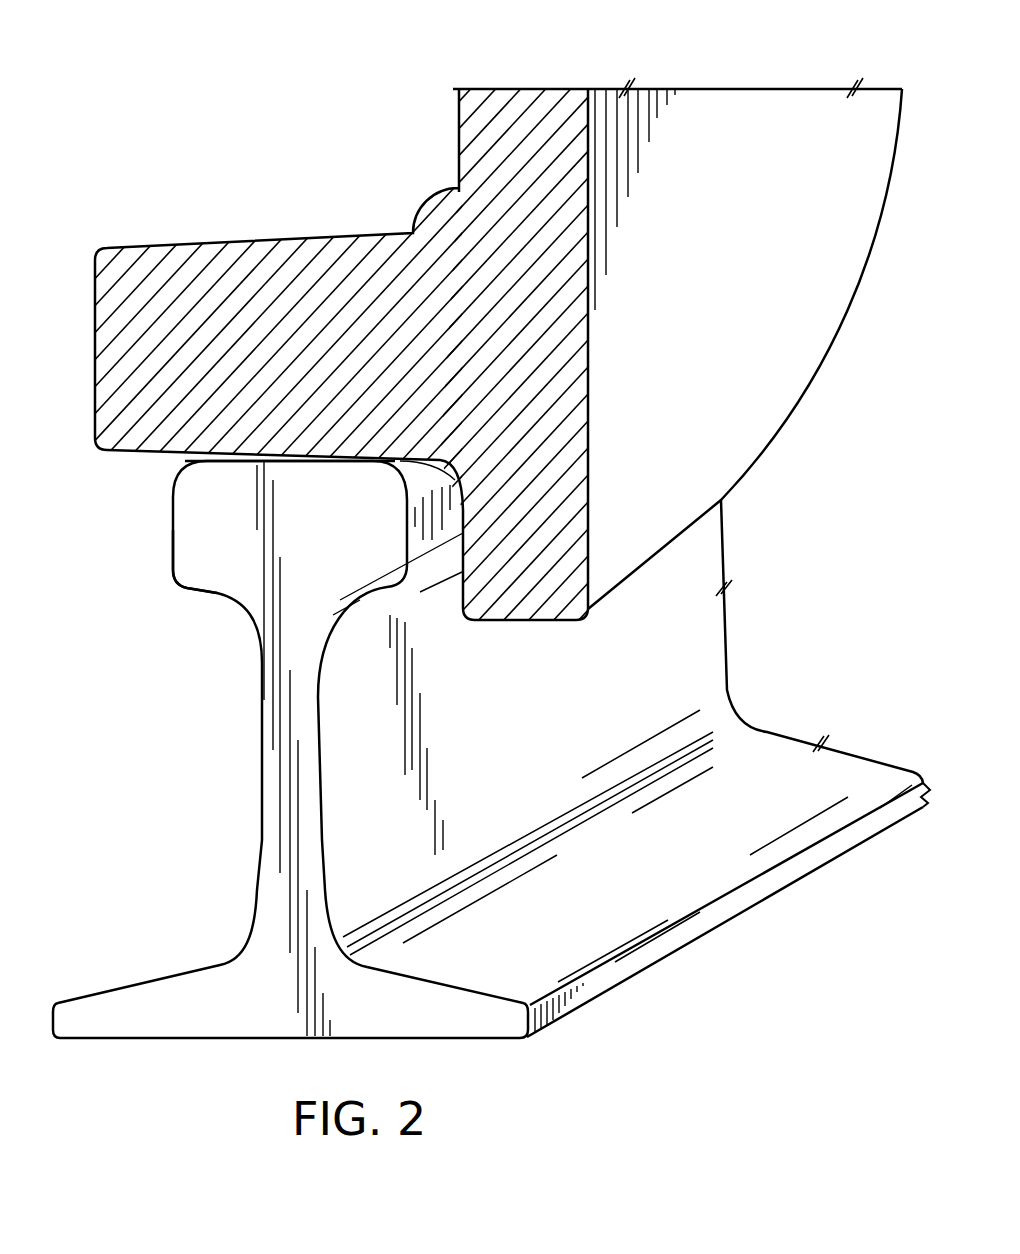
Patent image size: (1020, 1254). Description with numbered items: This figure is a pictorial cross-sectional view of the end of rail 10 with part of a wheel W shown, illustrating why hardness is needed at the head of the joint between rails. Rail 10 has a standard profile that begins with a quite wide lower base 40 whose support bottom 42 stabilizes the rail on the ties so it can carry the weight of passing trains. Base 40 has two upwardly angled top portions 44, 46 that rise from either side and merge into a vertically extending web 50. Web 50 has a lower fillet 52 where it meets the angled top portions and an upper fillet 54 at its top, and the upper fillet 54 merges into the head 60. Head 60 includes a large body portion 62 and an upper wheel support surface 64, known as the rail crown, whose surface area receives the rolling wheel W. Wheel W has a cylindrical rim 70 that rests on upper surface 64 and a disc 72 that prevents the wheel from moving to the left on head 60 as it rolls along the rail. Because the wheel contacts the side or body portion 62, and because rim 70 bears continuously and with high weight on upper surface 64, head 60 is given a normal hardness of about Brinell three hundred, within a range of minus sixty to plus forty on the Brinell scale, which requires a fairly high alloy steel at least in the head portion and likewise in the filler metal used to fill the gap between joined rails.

The wheel W is at (510, 340).
The rail 10 is at (491, 648).
The lower base 40 is at (491, 940).
The support bottom 42 is at (235, 1038).
The upwardly angled top portion 44 is at (433, 980).
The upwardly angled top portion 46 is at (190, 968).
The web 50 is at (302, 790).
The lower fillet 52 is at (348, 935).
The upper fillet 54 is at (340, 610).
The head 60 is at (178, 533).
The body portion 62 is at (217, 553).
The upper wheel support surface 64 is at (229, 456).
The cylindrical rim 70 is at (265, 248).
The disc 72 is at (615, 565).